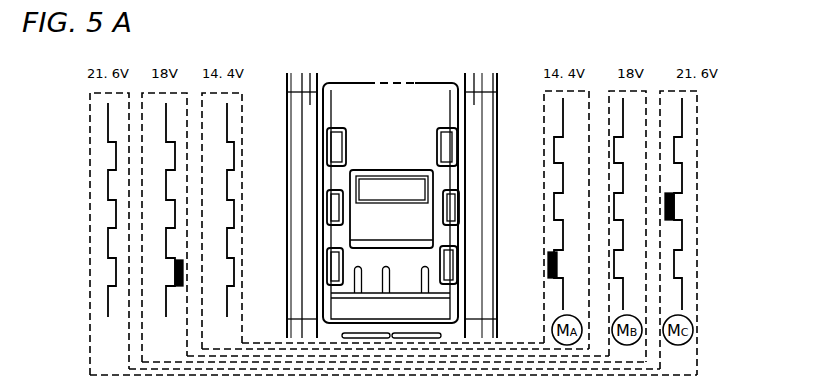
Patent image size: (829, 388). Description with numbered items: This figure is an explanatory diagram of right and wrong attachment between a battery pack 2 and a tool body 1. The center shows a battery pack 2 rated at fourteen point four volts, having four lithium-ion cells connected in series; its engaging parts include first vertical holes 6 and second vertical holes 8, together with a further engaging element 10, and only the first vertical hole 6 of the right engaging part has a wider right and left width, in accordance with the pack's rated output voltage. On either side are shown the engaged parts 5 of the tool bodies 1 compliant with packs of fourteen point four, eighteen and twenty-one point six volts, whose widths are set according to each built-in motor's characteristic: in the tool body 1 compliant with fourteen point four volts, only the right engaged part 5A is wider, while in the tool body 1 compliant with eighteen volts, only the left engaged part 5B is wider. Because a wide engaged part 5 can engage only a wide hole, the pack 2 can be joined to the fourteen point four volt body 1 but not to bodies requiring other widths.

The tool body 1 is at (590, 91).
The battery pack 2 is at (425, 85).
The engaged part 5 is at (112, 155).
The right engaged part of tool body 1A 5A is at (397, 207).
The left engaged part of tool body 1B 5B is at (396, 207).
The first vertical hole 6 is at (336, 267).
The second vertical hole 8 is at (334, 204).
The terminal 10 is at (334, 143).